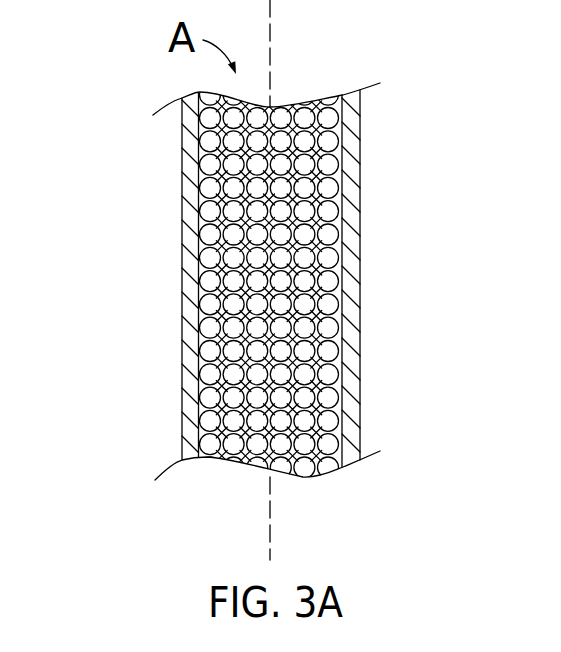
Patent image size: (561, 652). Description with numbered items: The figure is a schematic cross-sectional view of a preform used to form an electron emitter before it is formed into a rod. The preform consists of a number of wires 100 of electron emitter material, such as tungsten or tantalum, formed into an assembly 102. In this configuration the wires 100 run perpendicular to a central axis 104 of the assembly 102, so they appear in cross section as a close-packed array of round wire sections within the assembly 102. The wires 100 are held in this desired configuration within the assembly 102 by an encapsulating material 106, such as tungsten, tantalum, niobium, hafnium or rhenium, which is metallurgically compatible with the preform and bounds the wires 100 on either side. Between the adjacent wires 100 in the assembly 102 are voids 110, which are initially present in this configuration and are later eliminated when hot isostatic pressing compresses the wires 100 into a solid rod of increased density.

The wires 100 is at (305, 107).
The assembly 102 is at (167, 257).
The central axis 104 is at (271, 25).
The encapsulating material 106 is at (361, 145).
The voids 110 is at (226, 188).